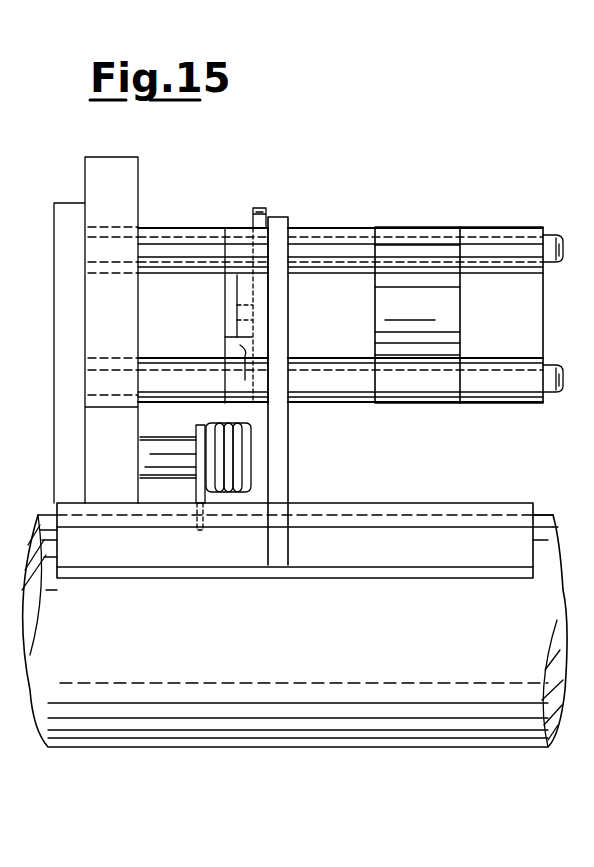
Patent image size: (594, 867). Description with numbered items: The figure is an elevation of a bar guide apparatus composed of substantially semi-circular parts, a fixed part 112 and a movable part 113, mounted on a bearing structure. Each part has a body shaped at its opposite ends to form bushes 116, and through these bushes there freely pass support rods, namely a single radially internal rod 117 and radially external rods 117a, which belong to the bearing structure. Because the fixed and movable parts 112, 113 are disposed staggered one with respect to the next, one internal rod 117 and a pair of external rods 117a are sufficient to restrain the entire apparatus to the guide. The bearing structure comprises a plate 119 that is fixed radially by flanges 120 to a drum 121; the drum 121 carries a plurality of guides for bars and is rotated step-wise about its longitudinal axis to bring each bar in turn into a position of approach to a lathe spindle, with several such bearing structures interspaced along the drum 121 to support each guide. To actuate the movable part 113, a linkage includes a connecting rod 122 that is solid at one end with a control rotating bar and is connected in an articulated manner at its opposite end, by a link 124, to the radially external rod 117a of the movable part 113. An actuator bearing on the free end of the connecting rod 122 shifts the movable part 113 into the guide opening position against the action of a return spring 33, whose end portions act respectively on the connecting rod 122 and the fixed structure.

The fixed semi-circular part 112 is at (168, 228).
The connecting rod 122 is at (260, 208).
The link 124 is at (243, 292).
The plate 119 is at (280, 305).
The bush 116 is at (355, 238).
The movable semi-circular part 113 is at (327, 340).
The radially external rod 117a is at (548, 240).
The radially internal rod 117 is at (551, 372).
The return spring 33 is at (245, 460).
The flange 120 is at (445, 522).
The drum 121 is at (295, 720).